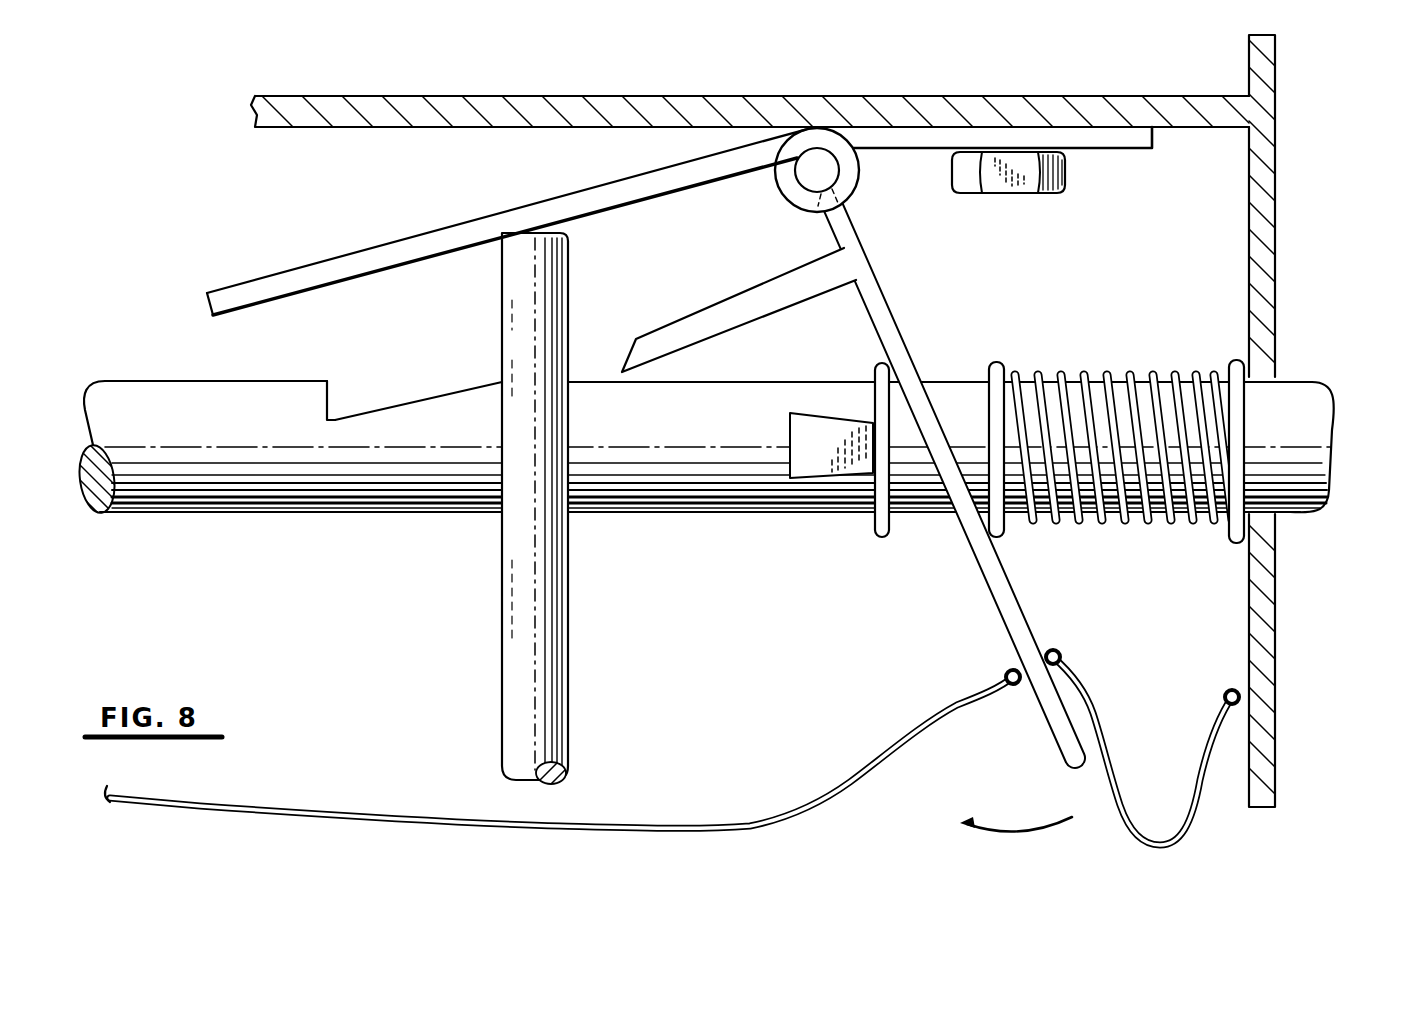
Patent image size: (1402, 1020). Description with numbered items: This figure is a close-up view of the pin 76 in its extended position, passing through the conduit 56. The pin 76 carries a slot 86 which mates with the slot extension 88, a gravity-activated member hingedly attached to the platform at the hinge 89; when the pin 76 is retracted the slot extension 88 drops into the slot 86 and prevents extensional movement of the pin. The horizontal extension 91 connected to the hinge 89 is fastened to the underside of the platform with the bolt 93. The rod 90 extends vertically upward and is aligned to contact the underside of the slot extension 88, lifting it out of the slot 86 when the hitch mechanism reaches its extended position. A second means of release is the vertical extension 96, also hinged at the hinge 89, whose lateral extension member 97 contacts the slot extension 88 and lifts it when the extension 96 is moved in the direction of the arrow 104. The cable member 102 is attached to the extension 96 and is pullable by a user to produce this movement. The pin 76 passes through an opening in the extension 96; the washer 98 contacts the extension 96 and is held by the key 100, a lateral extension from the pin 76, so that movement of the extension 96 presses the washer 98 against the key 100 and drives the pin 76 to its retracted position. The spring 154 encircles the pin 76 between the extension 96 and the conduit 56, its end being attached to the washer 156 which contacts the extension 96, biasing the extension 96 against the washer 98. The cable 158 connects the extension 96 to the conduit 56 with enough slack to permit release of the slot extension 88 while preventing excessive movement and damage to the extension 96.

The conduit 56 is at (1235, 594).
The pin 76 is at (180, 385).
The slot 86 is at (365, 390).
The slot extension 88 is at (376, 236).
The hinge 89 is at (800, 183).
The rod 90 is at (492, 612).
The horizontal extension 91 is at (904, 152).
The bolt 93 is at (1067, 170).
The vertical extension 96 is at (896, 323).
The lateral extension member 97 is at (740, 292).
The washer 98 is at (881, 538).
The key 100 is at (797, 430).
The cable member 102 is at (660, 812).
The arrow 104 is at (1020, 812).
The spring 154 is at (1117, 372).
The washer 156 is at (987, 360).
The cable 158 is at (1128, 748).